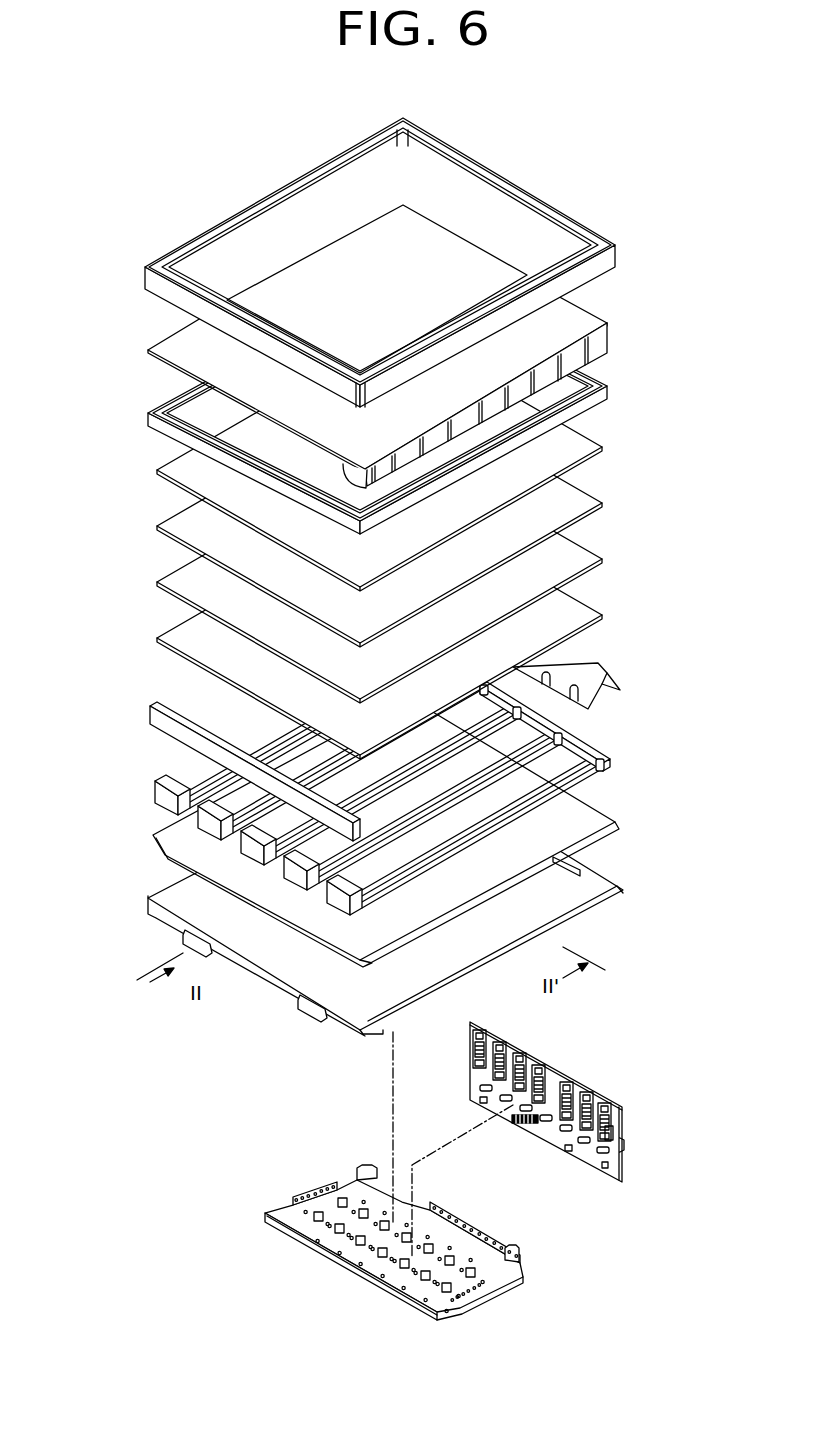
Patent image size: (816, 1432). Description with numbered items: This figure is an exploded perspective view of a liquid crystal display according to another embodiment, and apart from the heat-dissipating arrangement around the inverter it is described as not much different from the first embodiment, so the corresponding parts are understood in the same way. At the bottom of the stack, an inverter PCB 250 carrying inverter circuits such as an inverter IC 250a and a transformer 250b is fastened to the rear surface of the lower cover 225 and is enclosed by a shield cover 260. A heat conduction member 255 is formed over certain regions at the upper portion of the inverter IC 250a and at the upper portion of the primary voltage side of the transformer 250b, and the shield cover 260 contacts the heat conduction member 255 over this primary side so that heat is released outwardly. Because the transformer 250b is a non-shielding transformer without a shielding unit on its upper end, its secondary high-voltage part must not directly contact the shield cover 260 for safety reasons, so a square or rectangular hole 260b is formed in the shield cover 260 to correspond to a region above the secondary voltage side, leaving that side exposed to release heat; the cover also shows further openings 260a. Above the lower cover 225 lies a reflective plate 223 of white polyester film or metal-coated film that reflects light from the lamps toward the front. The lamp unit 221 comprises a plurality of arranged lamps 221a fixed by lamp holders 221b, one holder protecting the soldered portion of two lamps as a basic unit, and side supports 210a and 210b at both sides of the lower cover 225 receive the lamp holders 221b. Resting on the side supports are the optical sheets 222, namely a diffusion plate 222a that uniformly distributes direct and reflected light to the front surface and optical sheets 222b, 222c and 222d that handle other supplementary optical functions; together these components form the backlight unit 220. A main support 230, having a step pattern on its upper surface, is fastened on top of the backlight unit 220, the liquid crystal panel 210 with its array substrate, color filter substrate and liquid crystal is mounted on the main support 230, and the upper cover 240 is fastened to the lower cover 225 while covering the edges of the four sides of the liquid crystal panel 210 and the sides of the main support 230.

The top chassis 240 is at (610, 260).
The liquid crystal display panel 210 is at (603, 339).
The mold frame 230 is at (603, 397).
The backlight assembly 220 is at (471, 622).
The optical sheets 222 is at (445, 544).
The optical sheet 222a is at (593, 615).
The optical sheet 222b is at (593, 560).
The optical sheet 222c is at (593, 503).
The optical sheet 222d is at (420, 460).
The side support bar 210a is at (155, 718).
The lamp holder 210b is at (610, 675).
The lamp unit 221 is at (444, 784).
The lamps 221a is at (570, 778).
The lamp socket member 221b is at (610, 762).
The reflecting sheet 223 is at (593, 827).
The bottom chassis 225 is at (593, 907).
The inverter circuit board 250 is at (585, 1114).
The inverter IC 250a is at (603, 1152).
The transformer 250b is at (612, 1118).
The heat conduction member 255 is at (613, 1133).
The shield cover 260 is at (428, 1250).
The cover openings 260a is at (440, 1243).
The hole 260b is at (470, 1297).